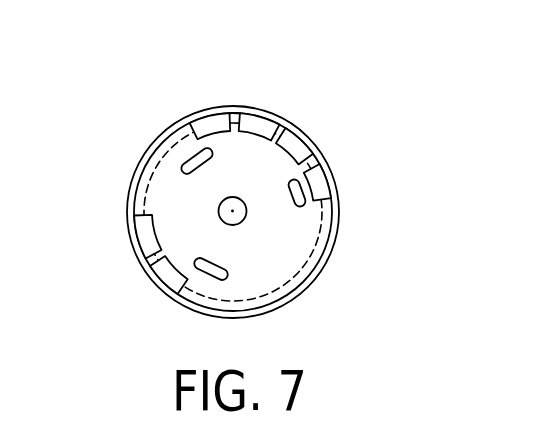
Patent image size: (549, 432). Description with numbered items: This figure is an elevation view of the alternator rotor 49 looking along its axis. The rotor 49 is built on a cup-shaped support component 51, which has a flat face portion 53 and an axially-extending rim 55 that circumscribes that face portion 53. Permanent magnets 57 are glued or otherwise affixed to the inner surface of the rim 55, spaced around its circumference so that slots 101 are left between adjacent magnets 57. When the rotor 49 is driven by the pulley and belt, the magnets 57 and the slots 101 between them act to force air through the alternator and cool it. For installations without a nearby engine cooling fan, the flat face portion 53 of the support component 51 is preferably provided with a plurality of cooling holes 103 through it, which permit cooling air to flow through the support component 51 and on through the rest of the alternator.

The rotor 49 is at (133, 140).
The cup-shaped support component 51 is at (158, 137).
The flat face portion 53 is at (277, 156).
The axially-extending rim 55 is at (303, 287).
The permanent magnets 57 is at (306, 146).
The slots 101 is at (232, 124).
The cooling holes 103 is at (305, 203).